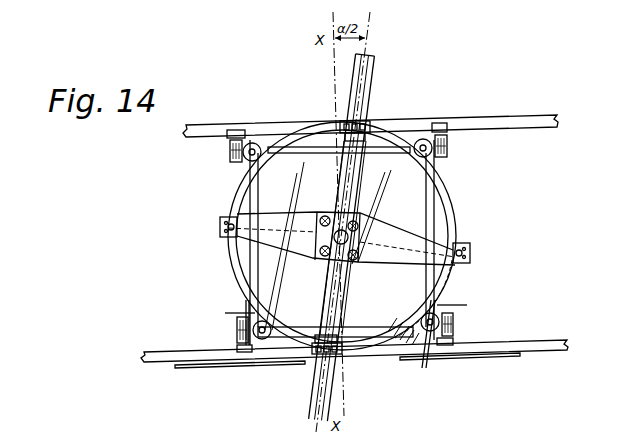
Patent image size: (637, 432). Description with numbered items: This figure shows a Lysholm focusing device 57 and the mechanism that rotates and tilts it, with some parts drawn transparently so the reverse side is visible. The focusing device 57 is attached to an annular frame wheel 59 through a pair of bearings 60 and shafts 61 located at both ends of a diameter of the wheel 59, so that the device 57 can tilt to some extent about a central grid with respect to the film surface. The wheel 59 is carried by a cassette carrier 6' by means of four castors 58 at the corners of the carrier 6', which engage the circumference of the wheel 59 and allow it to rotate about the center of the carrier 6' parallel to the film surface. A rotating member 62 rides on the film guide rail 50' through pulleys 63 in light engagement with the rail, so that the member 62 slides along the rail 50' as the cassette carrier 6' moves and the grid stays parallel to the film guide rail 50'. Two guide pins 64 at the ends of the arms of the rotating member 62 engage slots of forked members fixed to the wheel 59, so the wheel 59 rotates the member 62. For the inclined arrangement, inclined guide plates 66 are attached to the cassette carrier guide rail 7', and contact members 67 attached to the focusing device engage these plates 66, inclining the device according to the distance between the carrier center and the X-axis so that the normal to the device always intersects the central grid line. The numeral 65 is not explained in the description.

The cassette carrier guide rail 7' is at (354, 225).
The cassette carrier 6' is at (342, 242).
The film guide rail 50' is at (365, 237).
The focusing device 57 is at (415, 197).
The castors 58 is at (243, 165).
The annular frame wheel 59 is at (453, 205).
The bearings 60 is at (368, 123).
The shafts 61 is at (355, 122).
The rotating member 62 is at (377, 265).
The pulleys 63 is at (327, 213).
The guide pins 64 is at (218, 220).
The screw 65 is at (232, 230).
The inclined guide plates 66 is at (210, 366).
The contact members 67 is at (232, 342).